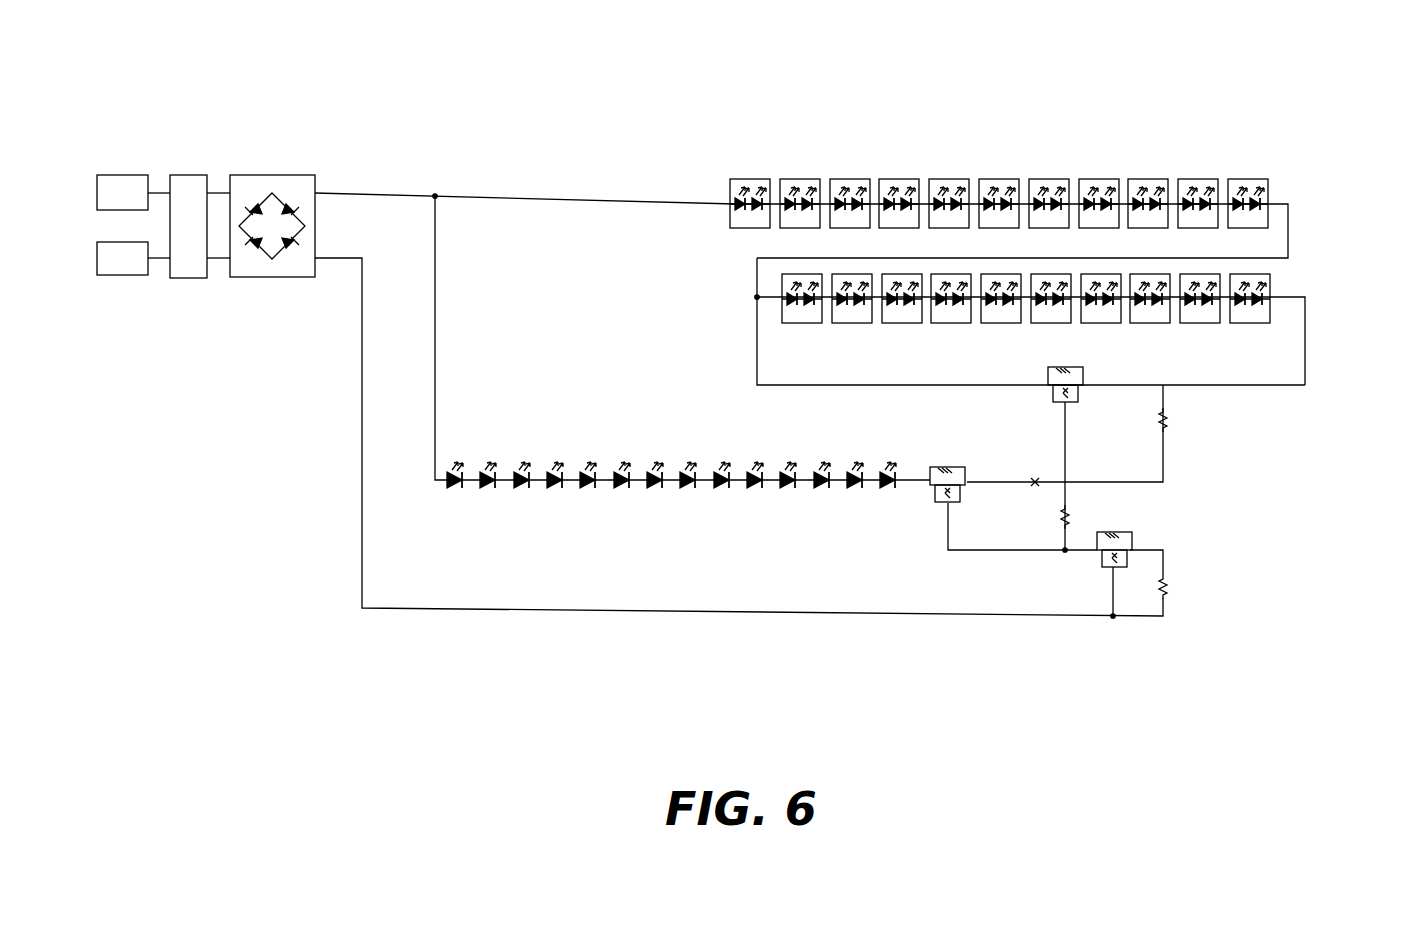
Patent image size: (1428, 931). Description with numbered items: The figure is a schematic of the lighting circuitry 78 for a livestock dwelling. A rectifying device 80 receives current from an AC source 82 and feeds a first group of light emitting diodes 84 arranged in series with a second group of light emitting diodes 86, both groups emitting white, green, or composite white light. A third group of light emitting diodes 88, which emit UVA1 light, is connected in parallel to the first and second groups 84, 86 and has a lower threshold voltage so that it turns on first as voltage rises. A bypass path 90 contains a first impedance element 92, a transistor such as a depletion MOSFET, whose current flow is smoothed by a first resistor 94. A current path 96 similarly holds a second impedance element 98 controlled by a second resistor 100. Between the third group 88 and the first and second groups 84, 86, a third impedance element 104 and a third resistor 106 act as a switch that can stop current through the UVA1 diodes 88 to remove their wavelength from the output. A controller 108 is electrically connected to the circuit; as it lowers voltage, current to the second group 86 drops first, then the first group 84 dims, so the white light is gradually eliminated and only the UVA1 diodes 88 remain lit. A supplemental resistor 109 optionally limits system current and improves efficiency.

The circuitry 78 is at (683, 126).
The rectifying device 80 is at (272, 175).
The AC source 82 is at (97, 125).
The first group of light emitting diodes 84 is at (1085, 126).
The second group of light emitting diodes 86 is at (1300, 293).
The third group of light emitting diodes 88 is at (702, 448).
The bypass path 90 is at (925, 372).
The first impedance element 92 is at (1092, 368).
The first resistor 94 is at (1168, 425).
The current path 96 is at (1262, 531).
The second impedance element 98 is at (1120, 533).
The second resistor 100 is at (1168, 592).
The third impedance element 104 is at (940, 468).
The third resistor 106 is at (1060, 518).
The controller 108 is at (188, 175).
The supplemental resistor 109 is at (1035, 478).